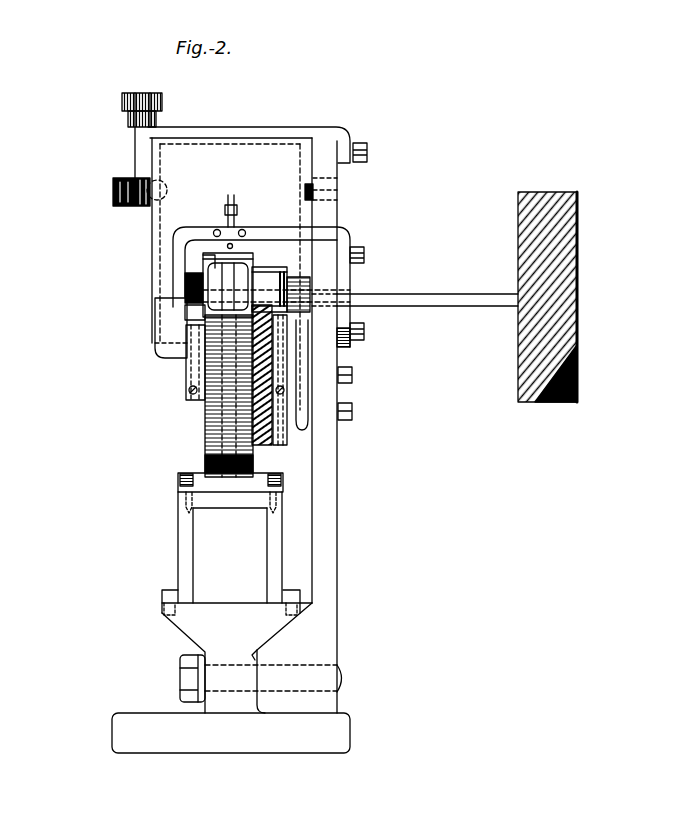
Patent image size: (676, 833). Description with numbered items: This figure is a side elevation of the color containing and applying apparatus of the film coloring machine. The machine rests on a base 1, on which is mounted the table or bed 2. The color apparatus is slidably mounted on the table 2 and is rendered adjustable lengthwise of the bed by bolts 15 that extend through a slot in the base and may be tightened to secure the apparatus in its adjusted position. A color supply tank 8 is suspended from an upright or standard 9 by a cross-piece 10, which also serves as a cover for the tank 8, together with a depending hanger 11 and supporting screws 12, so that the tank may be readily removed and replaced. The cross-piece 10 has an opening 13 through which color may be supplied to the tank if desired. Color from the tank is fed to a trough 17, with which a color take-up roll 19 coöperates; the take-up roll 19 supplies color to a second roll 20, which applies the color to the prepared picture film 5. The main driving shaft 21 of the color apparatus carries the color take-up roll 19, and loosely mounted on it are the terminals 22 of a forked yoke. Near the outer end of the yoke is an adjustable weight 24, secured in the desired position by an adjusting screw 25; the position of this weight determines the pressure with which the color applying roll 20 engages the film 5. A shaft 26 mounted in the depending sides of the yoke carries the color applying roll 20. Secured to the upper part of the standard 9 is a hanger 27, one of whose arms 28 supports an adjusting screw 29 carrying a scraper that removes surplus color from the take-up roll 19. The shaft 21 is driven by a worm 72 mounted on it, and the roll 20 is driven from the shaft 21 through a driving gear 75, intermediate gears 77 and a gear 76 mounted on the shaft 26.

The base 1 is at (212, 733).
The table 2 is at (183, 566).
The prepared picture film 5 is at (203, 463).
The color supply tank 8 is at (173, 217).
The upright 9 is at (323, 501).
The cross-piece 10 is at (270, 133).
The depending hanger 11 is at (140, 147).
The supporting screws 12 is at (120, 188).
The opening 13 is at (223, 140).
The bolts 15 is at (190, 673).
The trough 17 is at (165, 318).
The color take-up roll 19 is at (203, 258).
The color applying roll 20 is at (203, 453).
The main driving shaft 21 is at (458, 298).
The terminals 22 is at (193, 373).
The adjustable weight 24 is at (203, 312).
The adjusting screw 25 is at (186, 287).
The shaft 26 is at (202, 412).
The hanger 27 is at (265, 235).
The arms 28 is at (203, 256).
The adjusting screw 29 is at (228, 214).
The worm 72 is at (546, 402).
The driving gear 75 is at (263, 262).
The gear 76 is at (280, 431).
The intermediate gears 77 is at (287, 321).